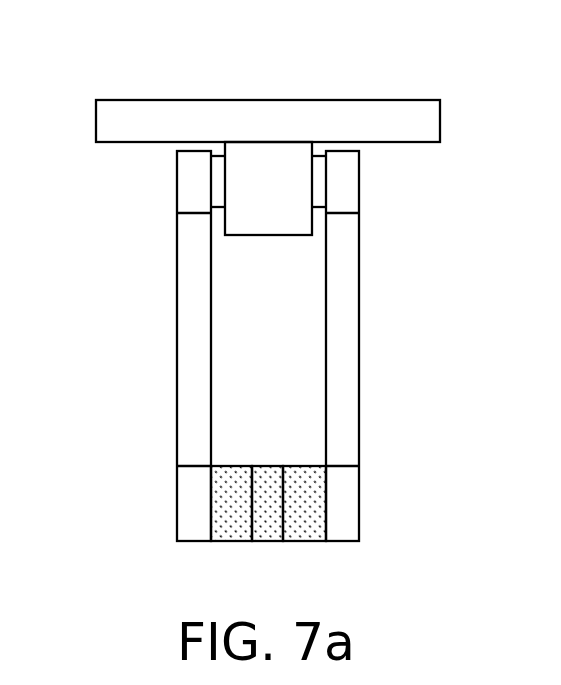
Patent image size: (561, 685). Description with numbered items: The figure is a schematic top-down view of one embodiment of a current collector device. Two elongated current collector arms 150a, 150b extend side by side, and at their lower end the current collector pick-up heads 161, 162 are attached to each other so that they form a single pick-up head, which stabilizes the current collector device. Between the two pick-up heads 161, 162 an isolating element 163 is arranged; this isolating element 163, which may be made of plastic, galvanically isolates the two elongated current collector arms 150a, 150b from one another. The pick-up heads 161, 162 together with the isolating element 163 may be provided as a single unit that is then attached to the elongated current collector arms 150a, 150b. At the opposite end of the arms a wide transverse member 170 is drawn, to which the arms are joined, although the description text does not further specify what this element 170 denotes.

The top plate / cover 170 is at (272, 118).
The elongated current collector arm 150a is at (177, 340).
The elongated current collector arm 150b is at (359, 340).
The pick-up head 161 is at (203, 506).
The pick-up head 162 is at (332, 506).
The isolating element 163 is at (272, 502).